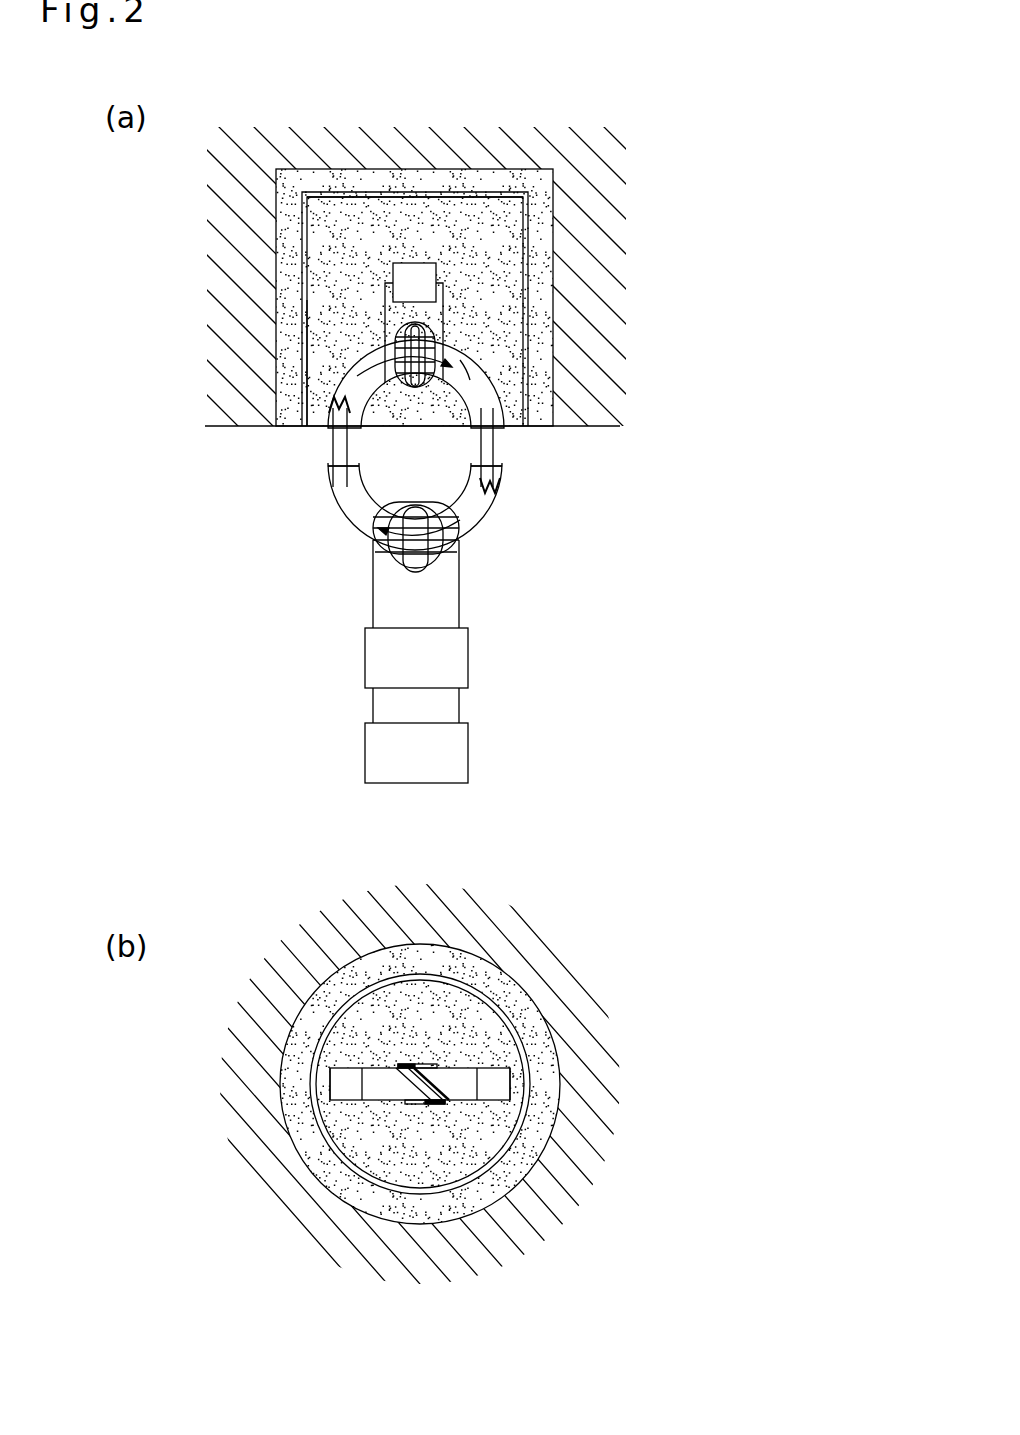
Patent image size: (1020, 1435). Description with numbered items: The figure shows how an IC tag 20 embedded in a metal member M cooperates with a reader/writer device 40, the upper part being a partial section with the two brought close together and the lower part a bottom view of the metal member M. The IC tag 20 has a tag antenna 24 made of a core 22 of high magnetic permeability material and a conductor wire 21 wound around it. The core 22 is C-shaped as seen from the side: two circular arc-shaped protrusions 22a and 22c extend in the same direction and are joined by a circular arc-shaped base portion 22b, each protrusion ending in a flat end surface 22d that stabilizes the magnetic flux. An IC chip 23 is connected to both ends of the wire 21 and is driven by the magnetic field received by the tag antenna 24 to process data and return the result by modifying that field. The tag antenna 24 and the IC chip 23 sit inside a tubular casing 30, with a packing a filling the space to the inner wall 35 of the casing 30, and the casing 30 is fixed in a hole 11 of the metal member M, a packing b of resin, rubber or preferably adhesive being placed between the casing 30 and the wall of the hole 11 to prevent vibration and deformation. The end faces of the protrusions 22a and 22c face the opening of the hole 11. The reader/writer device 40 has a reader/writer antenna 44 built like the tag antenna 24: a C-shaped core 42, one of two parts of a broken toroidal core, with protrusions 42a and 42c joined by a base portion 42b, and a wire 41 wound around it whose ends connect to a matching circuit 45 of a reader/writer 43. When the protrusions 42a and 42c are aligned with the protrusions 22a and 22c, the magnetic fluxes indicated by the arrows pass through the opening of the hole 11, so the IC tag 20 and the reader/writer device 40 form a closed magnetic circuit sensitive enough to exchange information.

The hole 11 is at (303, 198).
The IC tag 20 is at (444, 259).
The conductor wire 21 is at (385, 300).
The core 22 is at (355, 372).
The protrusion 22a is at (486, 428).
The base portion 22b is at (465, 377).
The protrusion 22c is at (335, 431).
The flat end surface 22d is at (350, 1083).
The IC chip 23 is at (393, 282).
The tag antenna 24 is at (495, 378).
The tubular casing 30 is at (531, 198).
The inner wall 35 is at (315, 378).
The reader/writer device 40 is at (448, 616).
The conductor wire 41 is at (372, 572).
The core 42 is at (355, 513).
The protrusion 42a is at (490, 450).
The base portion 42b is at (463, 517).
The protrusion 42c is at (333, 463).
The reader/writer 43 is at (443, 750).
The reader/writer antenna 44 is at (493, 519).
The matching circuit 45 is at (435, 658).
The packing a is at (355, 237).
The packing b is at (537, 298).
The metal member M is at (235, 378).